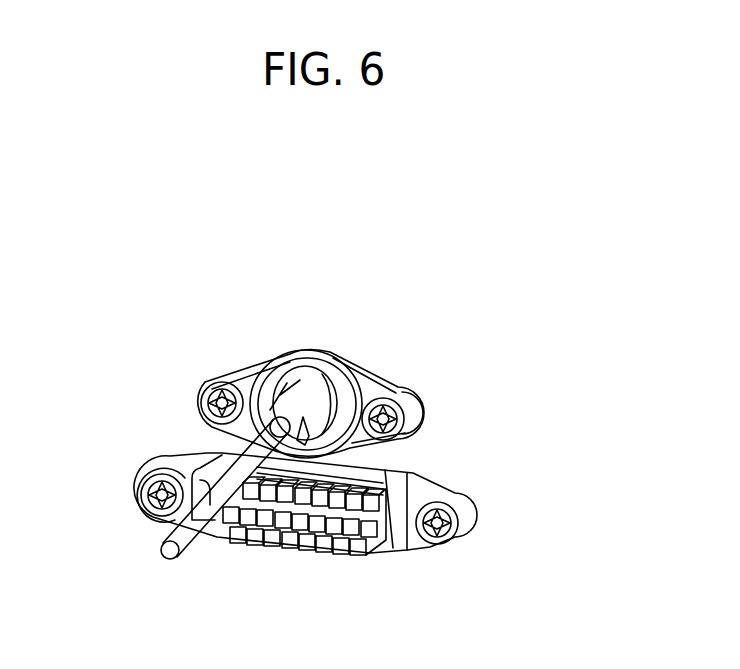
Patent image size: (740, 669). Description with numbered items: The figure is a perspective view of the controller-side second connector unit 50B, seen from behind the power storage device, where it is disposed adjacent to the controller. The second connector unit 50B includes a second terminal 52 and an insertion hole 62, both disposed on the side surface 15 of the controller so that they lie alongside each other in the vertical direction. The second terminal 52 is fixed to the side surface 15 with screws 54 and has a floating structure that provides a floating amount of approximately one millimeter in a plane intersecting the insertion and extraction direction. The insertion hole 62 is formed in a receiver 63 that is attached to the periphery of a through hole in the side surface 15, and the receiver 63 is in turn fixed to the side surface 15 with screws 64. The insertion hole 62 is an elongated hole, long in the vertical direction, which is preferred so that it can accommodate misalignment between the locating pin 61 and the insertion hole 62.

The controller-side second connector unit 50B is at (534, 244).
The side surface 15 is at (133, 341).
The second terminal 52 is at (320, 550).
The screws 54 is at (475, 504).
The locating pin 61 is at (162, 541).
The insertion hole 62 is at (287, 383).
The receiver 63 is at (372, 386).
The screws 64 is at (403, 392).